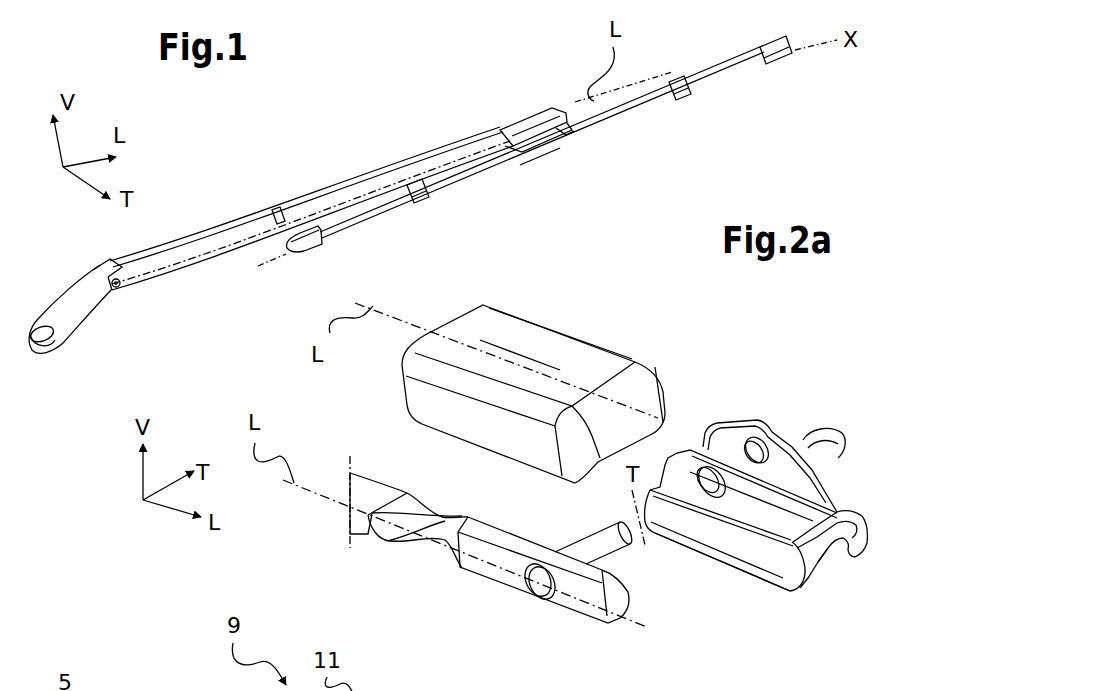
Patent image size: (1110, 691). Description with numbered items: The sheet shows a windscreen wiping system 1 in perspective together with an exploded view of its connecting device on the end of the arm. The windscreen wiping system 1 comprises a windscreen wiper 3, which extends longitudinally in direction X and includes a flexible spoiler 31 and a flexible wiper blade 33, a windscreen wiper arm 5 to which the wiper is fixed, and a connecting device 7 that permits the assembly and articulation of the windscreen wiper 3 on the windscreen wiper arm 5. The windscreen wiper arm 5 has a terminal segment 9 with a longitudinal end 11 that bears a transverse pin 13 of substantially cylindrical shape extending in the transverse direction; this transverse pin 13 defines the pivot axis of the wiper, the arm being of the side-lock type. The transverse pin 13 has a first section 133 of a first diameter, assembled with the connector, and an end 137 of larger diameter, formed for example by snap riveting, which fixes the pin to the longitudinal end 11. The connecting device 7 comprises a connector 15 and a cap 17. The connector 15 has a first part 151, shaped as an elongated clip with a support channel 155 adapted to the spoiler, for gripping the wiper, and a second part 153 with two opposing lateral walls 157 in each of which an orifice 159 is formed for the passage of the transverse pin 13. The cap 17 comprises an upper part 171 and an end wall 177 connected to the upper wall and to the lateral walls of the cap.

In FIG. 1, the windscreen wiping system 1 is at (399, 122).
In FIG. 1, the windscreen wiper 3 is at (730, 75).
In FIG. 1, the windscreen wiper arm 5 is at (270, 208).
In FIG. 2A, the windscreen wiper arm 5 is at (372, 500).
In FIG. 1, the connecting device 7 is at (503, 99).
In FIG. 2A, the connecting device 7 is at (833, 330).
In FIG. 1, the terminal segment 9 is at (481, 124).
In FIG. 2A, the terminal segment 9 is at (418, 568).
In FIG. 2A, the longitudinal end 11 is at (580, 618).
In FIG. 2A, the transverse pin 13 is at (585, 543).
In FIG. 1, the connector 15 is at (540, 170).
In FIG. 2A, the connector 15 is at (761, 586).
In FIG. 1, the cap 17 is at (536, 108).
In FIG. 2A, the cap 17 is at (630, 332).
In FIG. 1, the spoiler 31 is at (746, 58).
In FIG. 1, the wiper blade 33 is at (562, 131).
In FIG. 2A, the first section 133 is at (630, 546).
In FIG. 2A, the end 137 is at (540, 586).
In FIG. 2A, the first part 151 is at (828, 591).
In FIG. 2A, the second part 153 is at (738, 396).
In FIG. 2A, the support channel 155 is at (837, 569).
In FIG. 2A, the lateral walls 157 is at (772, 484).
In FIG. 2A, the orifice 159 is at (757, 438).
In FIG. 2A, the upper part 171 is at (547, 350).
In FIG. 2A, the end wall 177 is at (665, 424).